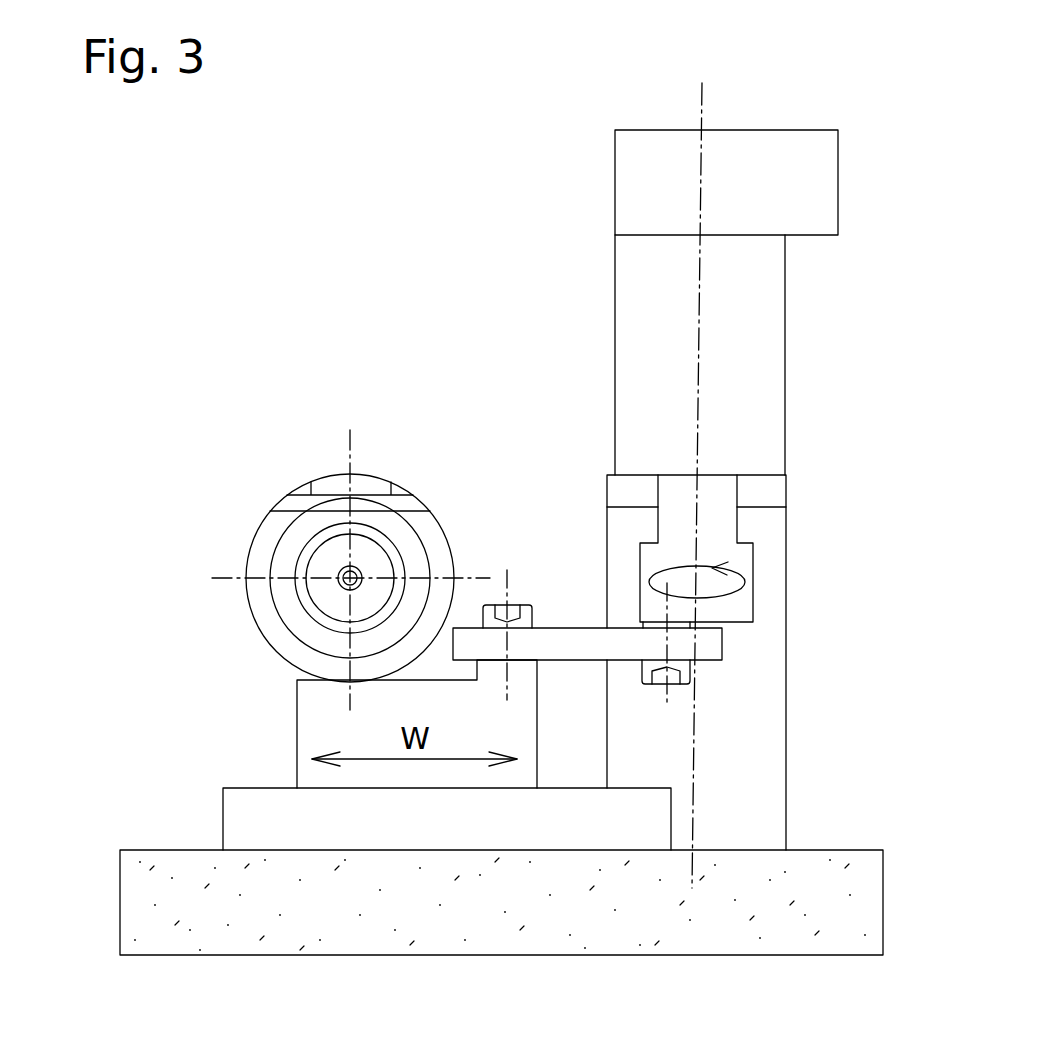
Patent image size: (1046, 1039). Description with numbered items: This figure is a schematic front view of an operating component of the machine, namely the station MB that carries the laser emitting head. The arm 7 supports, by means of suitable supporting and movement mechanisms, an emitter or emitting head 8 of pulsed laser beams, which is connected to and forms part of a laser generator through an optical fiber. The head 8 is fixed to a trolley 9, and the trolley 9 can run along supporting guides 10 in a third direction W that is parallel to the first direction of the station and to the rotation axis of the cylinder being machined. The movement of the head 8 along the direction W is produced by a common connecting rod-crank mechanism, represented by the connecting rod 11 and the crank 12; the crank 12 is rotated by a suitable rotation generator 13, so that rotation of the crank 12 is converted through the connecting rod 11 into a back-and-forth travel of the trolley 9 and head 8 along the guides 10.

The arm 7 is at (328, 915).
The emitting head 8 is at (333, 492).
The trolley 9 is at (320, 720).
The supporting guides 10 is at (253, 828).
The connecting rod 11 is at (558, 642).
The crank 12 is at (743, 557).
The rotation generator 13 is at (758, 320).